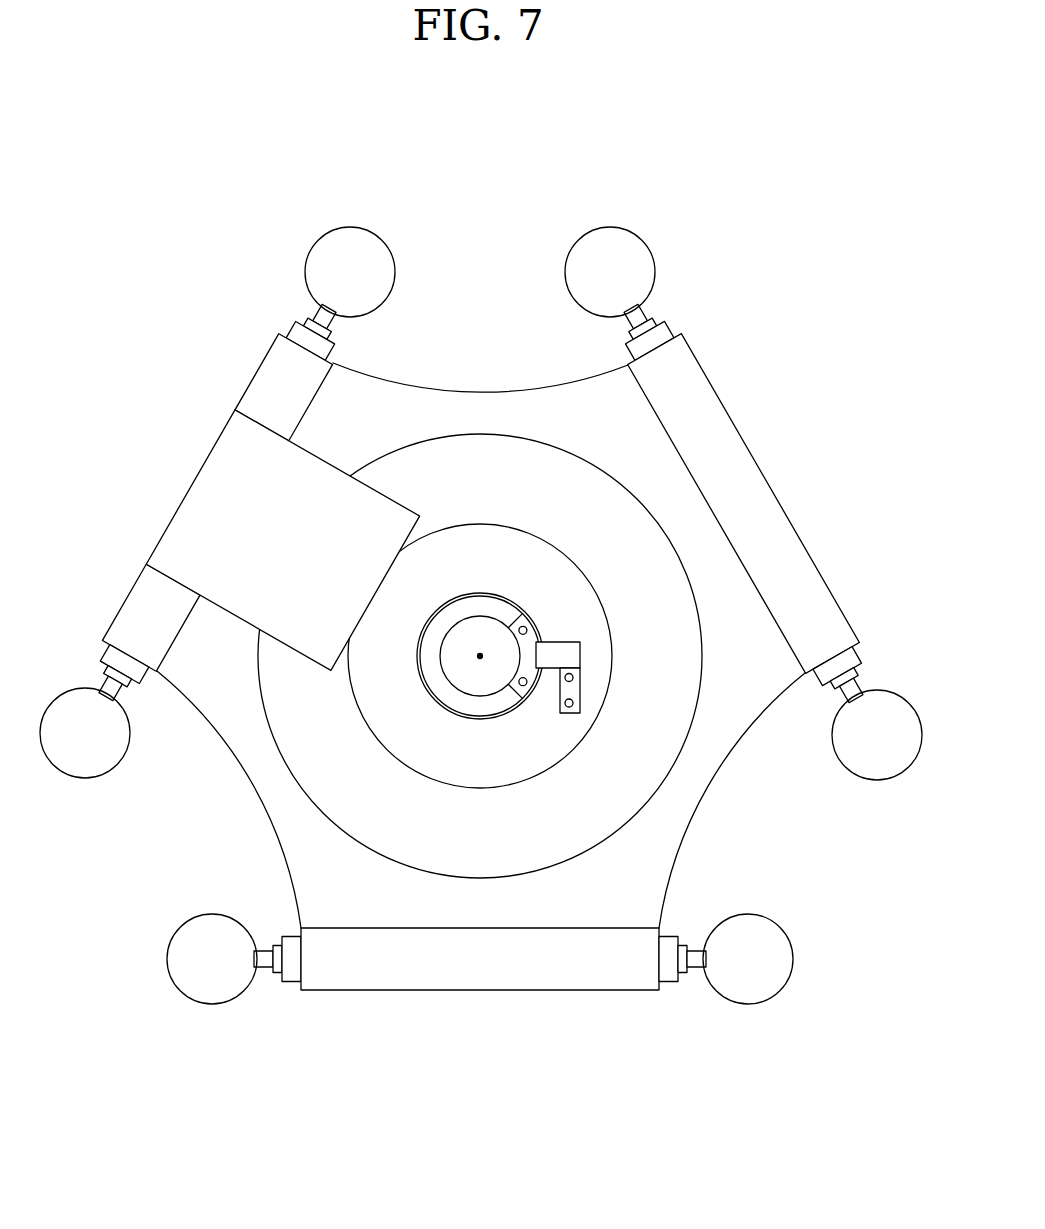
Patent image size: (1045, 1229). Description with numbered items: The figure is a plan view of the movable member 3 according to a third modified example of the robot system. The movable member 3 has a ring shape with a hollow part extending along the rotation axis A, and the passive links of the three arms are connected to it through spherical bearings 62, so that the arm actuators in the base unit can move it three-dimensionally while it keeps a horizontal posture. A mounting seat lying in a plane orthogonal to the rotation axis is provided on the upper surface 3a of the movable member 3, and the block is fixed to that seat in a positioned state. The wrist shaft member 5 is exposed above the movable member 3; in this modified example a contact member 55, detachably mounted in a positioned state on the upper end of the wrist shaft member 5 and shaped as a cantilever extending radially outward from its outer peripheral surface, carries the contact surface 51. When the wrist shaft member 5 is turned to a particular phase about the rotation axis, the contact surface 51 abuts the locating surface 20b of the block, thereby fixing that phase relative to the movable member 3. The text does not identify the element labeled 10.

The movable member 3 is at (481, 641).
The upper surface 3a is at (397, 608).
The wrist shaft member 5 is at (437, 685).
The holding hand 10 is at (590, 758).
The locating surface 20b is at (616, 606).
The contact surface 51 is at (560, 693).
The contact member 55 is at (563, 641).
The spherical bearing 62 is at (348, 227).